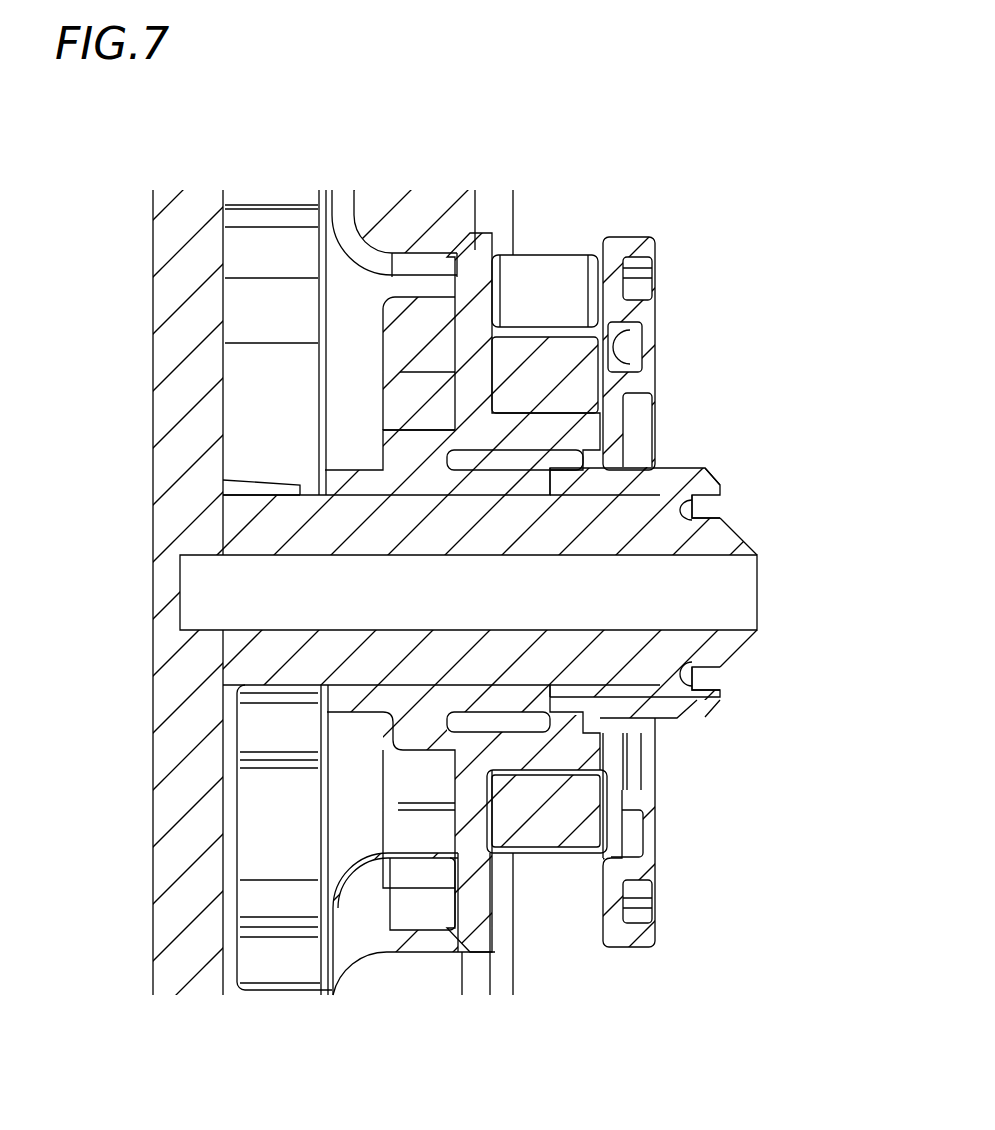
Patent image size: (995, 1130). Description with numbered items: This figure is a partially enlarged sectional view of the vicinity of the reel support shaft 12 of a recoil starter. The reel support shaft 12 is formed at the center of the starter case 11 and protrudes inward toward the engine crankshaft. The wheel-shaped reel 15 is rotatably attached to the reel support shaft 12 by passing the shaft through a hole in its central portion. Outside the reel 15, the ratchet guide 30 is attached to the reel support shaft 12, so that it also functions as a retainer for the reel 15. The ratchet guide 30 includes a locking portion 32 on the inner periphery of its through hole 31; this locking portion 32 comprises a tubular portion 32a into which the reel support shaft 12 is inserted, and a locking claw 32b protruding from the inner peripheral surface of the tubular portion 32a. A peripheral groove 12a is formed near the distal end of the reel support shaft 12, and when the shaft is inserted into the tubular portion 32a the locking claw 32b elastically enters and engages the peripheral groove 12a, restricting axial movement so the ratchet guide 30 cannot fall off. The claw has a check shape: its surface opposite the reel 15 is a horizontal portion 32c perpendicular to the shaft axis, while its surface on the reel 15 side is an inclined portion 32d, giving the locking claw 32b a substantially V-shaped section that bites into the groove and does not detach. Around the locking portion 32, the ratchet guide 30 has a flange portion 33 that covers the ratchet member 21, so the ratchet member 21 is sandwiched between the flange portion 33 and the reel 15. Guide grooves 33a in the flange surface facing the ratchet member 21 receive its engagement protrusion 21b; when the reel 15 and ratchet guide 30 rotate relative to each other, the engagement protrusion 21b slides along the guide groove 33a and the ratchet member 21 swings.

The starter case 11 is at (140, 879).
The reel support shaft 12 is at (758, 595).
The peripheral groove 12a is at (740, 540).
The reel 15 is at (443, 968).
The ratchet member 21 is at (545, 255).
The engagement protrusion 21b is at (615, 858).
The ratchet guide 30 is at (680, 272).
The through hole 31 is at (655, 500).
The locking portion 32 is at (705, 468).
The tubular portion 32a is at (668, 718).
The locking claw 32b is at (683, 512).
The horizontal portion 32c is at (720, 493).
The inclined portion 32d is at (680, 505).
The flange portion 33 is at (656, 860).
The guide groove 33a is at (625, 340).